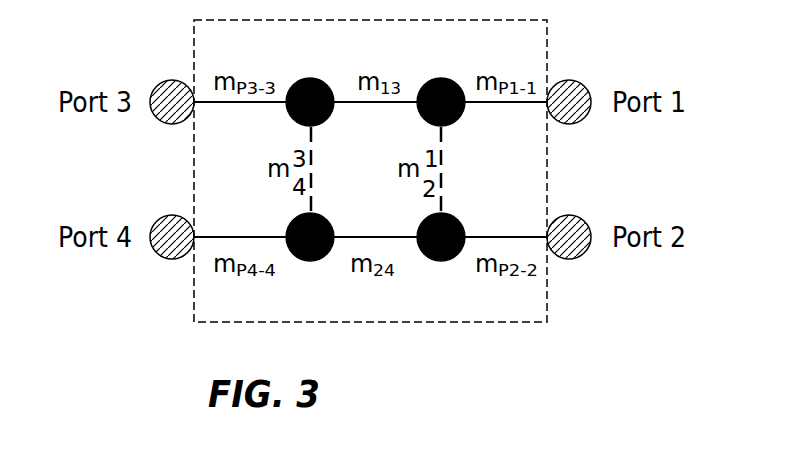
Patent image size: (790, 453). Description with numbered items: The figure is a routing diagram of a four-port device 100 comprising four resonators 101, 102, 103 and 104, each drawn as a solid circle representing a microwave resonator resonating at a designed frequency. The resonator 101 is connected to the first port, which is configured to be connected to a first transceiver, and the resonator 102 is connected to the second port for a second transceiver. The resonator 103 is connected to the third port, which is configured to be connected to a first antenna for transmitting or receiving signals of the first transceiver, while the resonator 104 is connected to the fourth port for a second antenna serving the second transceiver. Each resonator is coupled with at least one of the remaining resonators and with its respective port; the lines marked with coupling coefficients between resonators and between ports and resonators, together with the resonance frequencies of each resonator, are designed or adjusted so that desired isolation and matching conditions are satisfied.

The four-port device 100 is at (370, 196).
The resonator 101 is at (444, 81).
The resonator 102 is at (444, 260).
The resonator 103 is at (314, 81).
The resonator 104 is at (314, 260).